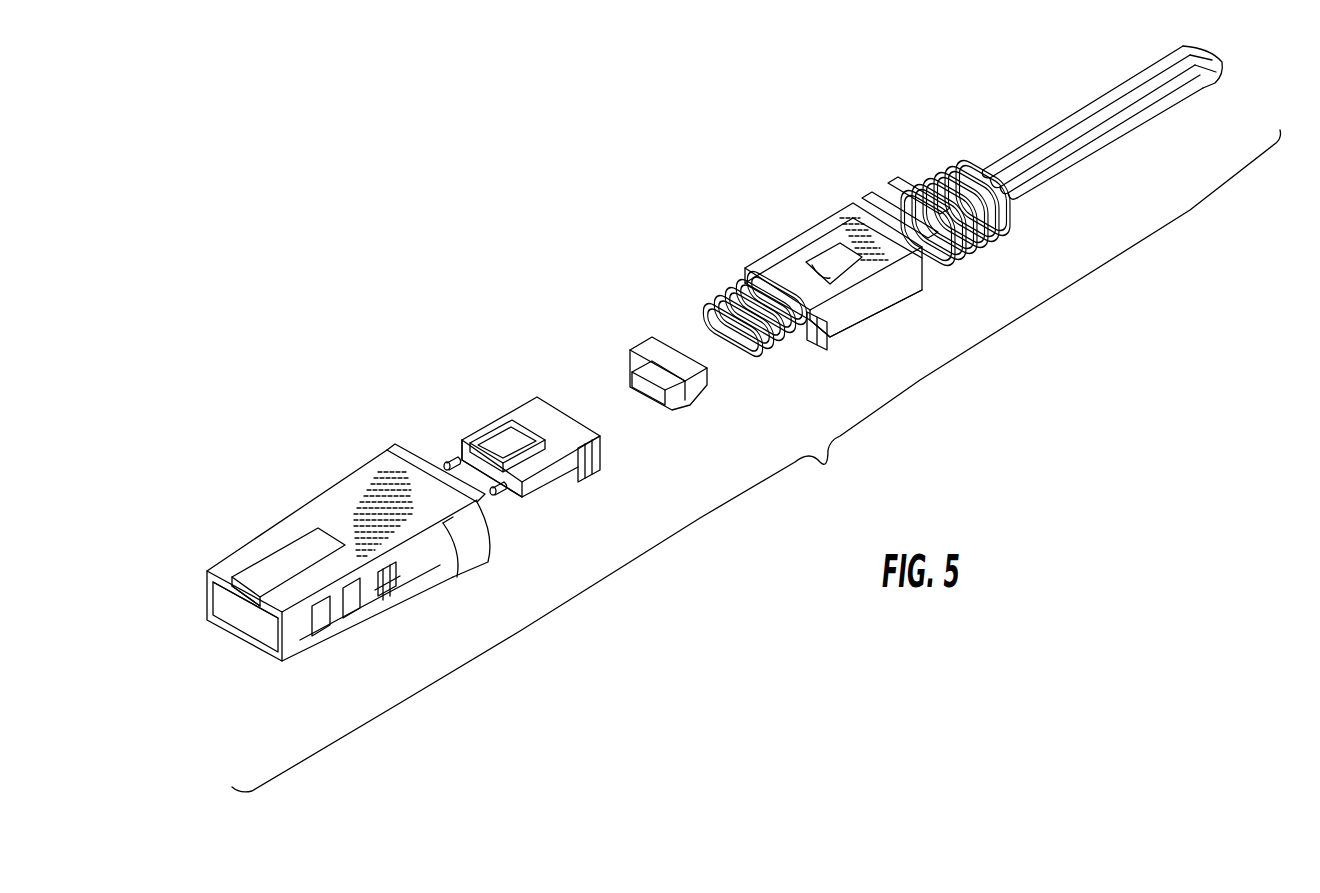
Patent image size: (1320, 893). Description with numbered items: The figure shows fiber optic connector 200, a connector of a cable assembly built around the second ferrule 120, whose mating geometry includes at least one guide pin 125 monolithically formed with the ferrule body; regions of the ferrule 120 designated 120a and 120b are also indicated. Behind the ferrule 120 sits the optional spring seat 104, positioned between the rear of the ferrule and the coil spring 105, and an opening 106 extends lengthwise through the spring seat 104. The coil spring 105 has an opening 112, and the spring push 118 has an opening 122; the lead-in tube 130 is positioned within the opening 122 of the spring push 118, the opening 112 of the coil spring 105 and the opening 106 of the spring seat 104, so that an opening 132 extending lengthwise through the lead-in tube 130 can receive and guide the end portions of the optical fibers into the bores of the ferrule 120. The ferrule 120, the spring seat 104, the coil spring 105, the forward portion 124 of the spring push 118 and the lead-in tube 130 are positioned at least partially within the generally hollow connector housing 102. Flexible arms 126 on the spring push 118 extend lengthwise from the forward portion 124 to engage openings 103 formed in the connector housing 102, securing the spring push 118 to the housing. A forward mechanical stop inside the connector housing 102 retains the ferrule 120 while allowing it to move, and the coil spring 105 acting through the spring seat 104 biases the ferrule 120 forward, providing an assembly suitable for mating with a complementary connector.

The connector housing 102 is at (352, 593).
The openings 103 is at (400, 600).
The spring seat 104 is at (706, 360).
The coil spring 105 is at (718, 303).
The opening 106 is at (628, 367).
The opening 112 is at (740, 299).
The spring push 118 is at (894, 287).
The second ferrule 120 is at (553, 527).
The holder front end 120a is at (541, 505).
The holder rear end 120b is at (605, 480).
The opening 122 is at (835, 267).
The forward portion 124 is at (830, 220).
The guide pin 125 is at (503, 484).
The flexible arms 126 is at (840, 337).
The lead-in tube 130 is at (1125, 135).
The opening 132 is at (1008, 240).
The fiber optic connector 200 is at (756, 461).